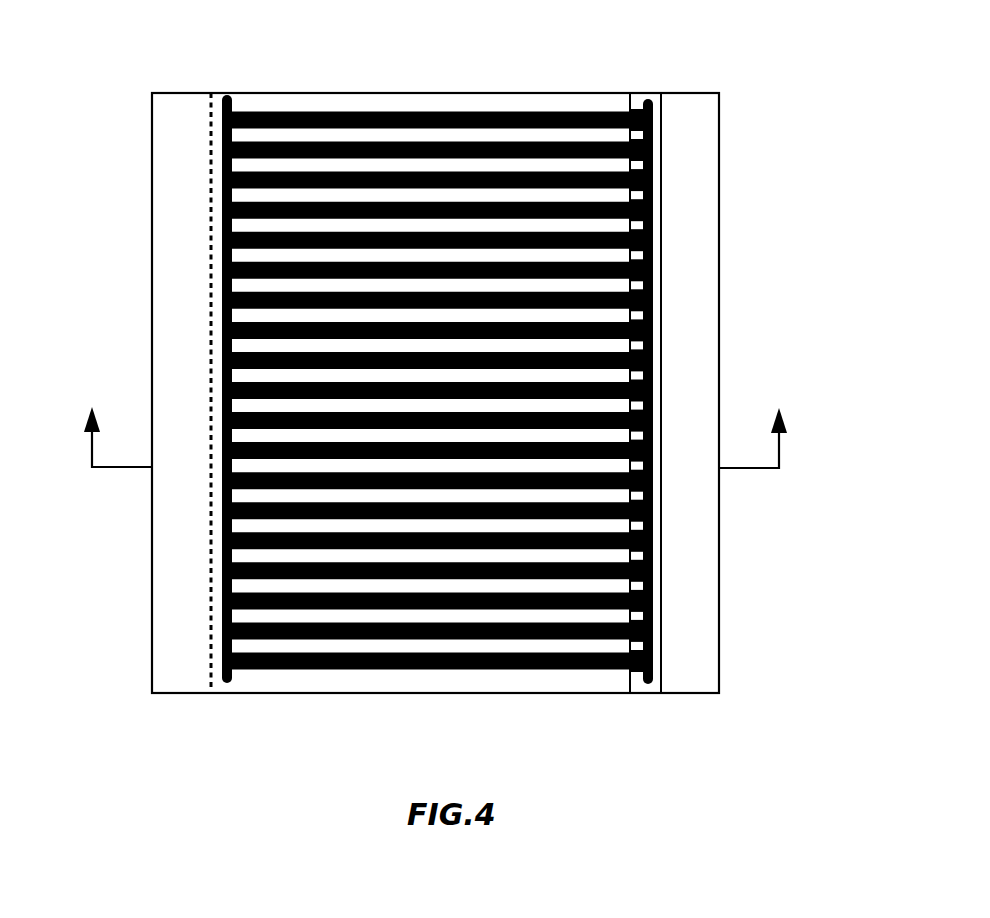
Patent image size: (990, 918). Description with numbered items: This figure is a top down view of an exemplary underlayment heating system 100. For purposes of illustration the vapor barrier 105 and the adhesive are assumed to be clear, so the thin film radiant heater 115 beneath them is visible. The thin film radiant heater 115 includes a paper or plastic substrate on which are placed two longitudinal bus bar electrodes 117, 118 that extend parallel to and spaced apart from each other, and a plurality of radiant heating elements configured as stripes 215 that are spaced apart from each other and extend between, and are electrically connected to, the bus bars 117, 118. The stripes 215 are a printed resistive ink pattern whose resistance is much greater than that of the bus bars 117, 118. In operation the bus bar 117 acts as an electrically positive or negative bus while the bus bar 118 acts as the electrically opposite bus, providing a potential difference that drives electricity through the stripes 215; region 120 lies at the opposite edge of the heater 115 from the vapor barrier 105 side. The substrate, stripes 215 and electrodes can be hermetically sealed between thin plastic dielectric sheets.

The heating system 100 is at (818, 217).
The vapor barrier 105 is at (168, 92).
The thin film radiant heater 115 is at (273, 693).
The longitudinal bus bar electrode 117 is at (228, 100).
The longitudinal bus bar electrode 118 is at (641, 97).
The second edge region 120 is at (710, 92).
The stripes 215 is at (370, 112).